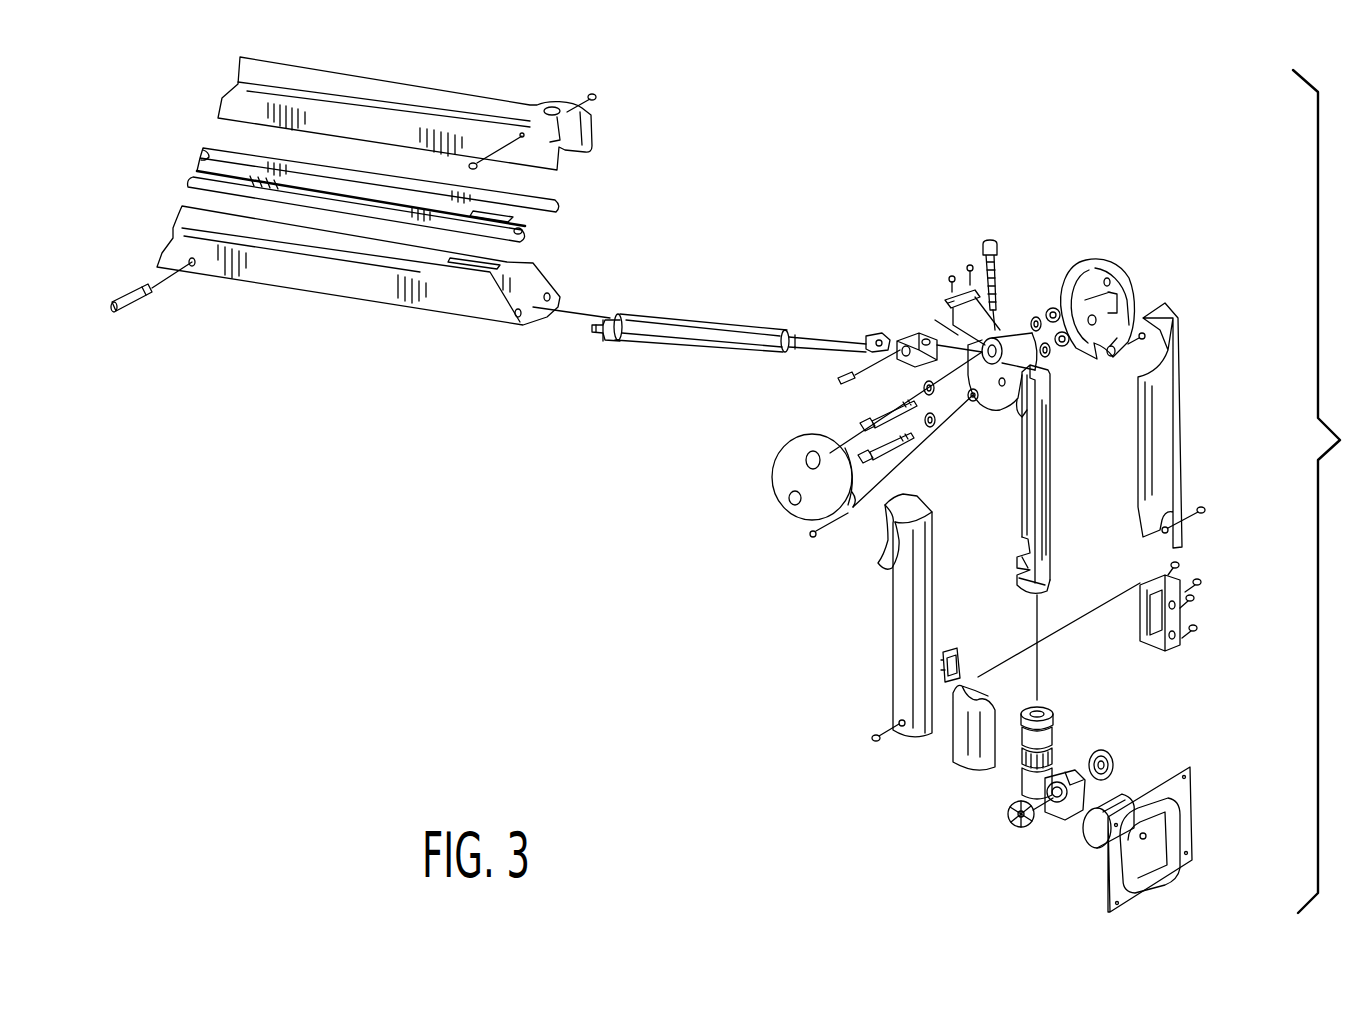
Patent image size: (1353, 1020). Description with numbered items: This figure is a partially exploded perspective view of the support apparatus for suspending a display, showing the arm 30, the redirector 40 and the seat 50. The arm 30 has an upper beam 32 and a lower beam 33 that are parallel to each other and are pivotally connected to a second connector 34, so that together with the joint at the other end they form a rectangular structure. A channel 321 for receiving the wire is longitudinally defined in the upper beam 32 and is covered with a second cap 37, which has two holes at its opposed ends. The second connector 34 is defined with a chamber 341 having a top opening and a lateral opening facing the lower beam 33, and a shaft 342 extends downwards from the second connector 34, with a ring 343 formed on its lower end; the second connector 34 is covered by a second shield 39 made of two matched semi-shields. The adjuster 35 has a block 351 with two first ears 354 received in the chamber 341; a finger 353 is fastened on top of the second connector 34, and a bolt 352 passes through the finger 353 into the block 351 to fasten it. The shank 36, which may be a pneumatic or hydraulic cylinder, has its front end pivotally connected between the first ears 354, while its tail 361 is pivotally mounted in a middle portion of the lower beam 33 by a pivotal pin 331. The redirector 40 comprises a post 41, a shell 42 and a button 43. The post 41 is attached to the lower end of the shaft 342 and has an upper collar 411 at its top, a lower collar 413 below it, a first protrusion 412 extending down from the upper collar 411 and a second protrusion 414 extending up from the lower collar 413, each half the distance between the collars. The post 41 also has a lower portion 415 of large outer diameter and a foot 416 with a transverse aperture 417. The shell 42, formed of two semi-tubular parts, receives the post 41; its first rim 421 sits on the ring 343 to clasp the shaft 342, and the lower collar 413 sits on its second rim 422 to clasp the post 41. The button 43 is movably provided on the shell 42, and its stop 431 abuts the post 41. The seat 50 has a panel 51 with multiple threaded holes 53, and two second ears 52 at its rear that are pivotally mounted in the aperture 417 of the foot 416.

The arm 30 is at (710, 480).
The upper beam 32 is at (552, 204).
The channel 321 is at (200, 150).
The lower beam 33 is at (175, 248).
The pivotal pin 331 is at (128, 297).
The second connector 34 is at (1037, 368).
The chamber 341 is at (993, 332).
The shaft 342 is at (1053, 452).
The ring 343 is at (1050, 580).
The adjuster 35 is at (952, 262).
The block 351 is at (935, 322).
The bolt 352 is at (997, 243).
The finger 353 is at (945, 298).
The first ears 354 is at (905, 338).
The shank 36 is at (720, 345).
The tail 361 is at (590, 345).
The second cap 37 is at (415, 92).
The second shield 39 is at (790, 537).
The redirector 40 is at (1225, 600).
The post 41 is at (1023, 740).
The upper collar 411 is at (1040, 713).
The first protrusion 412 is at (1053, 733).
The lower collar 413 is at (1023, 773).
The second protrusion 414 is at (1022, 736).
The lower portion 415 is at (1058, 760).
The foot 416 is at (1082, 788).
The aperture 417 is at (1055, 800).
The shell 42 is at (1183, 615).
The first rim 421 is at (1177, 592).
The second rim 422 is at (1178, 640).
The button 43 is at (952, 652).
The stop 431 is at (963, 668).
The seat 50 is at (1212, 800).
The panel 51 is at (1190, 853).
The second ears 52 is at (1095, 838).
The threaded holes 53 is at (1128, 895).